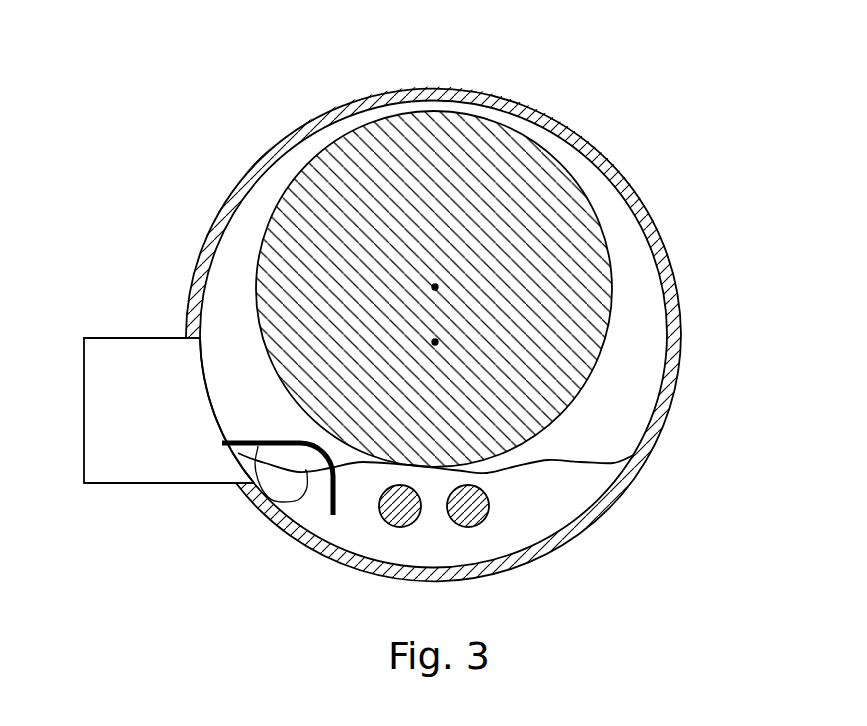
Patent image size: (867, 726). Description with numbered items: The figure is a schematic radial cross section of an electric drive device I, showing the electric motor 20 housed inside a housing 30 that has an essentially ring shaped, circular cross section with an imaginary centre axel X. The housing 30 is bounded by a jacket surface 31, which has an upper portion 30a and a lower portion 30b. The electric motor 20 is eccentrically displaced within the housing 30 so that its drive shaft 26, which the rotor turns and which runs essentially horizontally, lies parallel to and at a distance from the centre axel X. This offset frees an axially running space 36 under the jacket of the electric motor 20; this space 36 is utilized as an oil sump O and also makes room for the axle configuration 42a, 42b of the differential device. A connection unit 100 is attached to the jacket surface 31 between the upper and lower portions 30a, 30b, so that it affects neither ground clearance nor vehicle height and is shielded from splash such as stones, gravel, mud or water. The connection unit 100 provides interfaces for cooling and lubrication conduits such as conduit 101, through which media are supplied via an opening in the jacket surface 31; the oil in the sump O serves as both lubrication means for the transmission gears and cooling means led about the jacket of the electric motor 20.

The housing 30 is at (393, 336).
The upper portion 30a is at (428, 87).
The lower portion 30b is at (408, 583).
The jacket surface 31 is at (226, 197).
The electric motor 20 is at (254, 249).
The drive shaft 26 is at (435, 287).
The centre axel X is at (435, 342).
The axially running space 36 is at (548, 497).
The axle configuration 42a is at (388, 530).
The axle configuration 42b is at (463, 532).
The connection unit 100 is at (180, 488).
The cooling and lubrication conduit 101 is at (252, 485).
The oil sump O is at (256, 500).
The electric drive device I is at (545, 84).